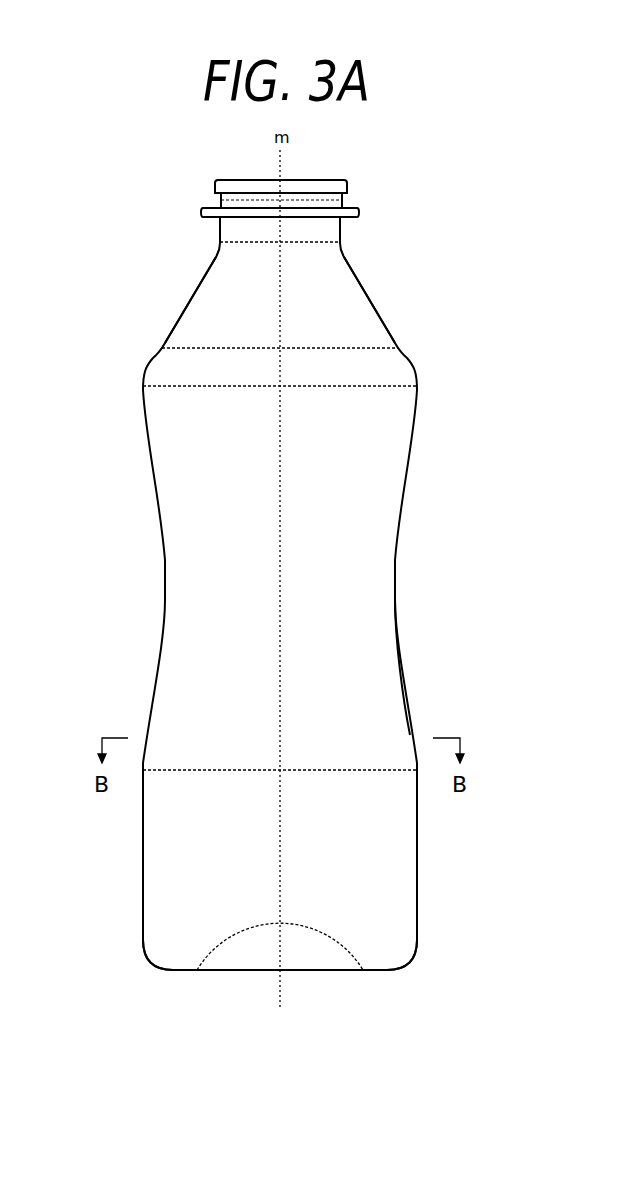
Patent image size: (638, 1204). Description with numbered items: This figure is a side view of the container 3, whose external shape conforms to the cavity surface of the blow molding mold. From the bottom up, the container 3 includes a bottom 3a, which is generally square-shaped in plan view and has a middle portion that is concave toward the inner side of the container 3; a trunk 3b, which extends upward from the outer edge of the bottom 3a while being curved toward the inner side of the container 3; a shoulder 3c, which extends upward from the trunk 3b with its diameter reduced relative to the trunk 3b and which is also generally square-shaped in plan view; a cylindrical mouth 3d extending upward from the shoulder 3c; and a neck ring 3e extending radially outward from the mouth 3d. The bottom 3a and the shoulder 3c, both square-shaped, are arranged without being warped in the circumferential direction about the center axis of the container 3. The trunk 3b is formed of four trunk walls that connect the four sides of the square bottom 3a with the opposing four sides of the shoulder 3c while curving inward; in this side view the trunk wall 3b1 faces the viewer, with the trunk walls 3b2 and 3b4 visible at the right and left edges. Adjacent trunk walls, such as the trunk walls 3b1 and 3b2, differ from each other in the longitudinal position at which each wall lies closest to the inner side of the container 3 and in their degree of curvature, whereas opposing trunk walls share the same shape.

The container 3 is at (421, 338).
The bottom 3a is at (367, 971).
The trunk 3b is at (289, 593).
The trunk wall 3b1 is at (348, 663).
The trunk wall 3b2 is at (397, 582).
The trunk wall 3b4 is at (163, 588).
The shoulder 3c is at (367, 290).
The mouth 3d is at (342, 228).
The neck ring 3e is at (357, 212).